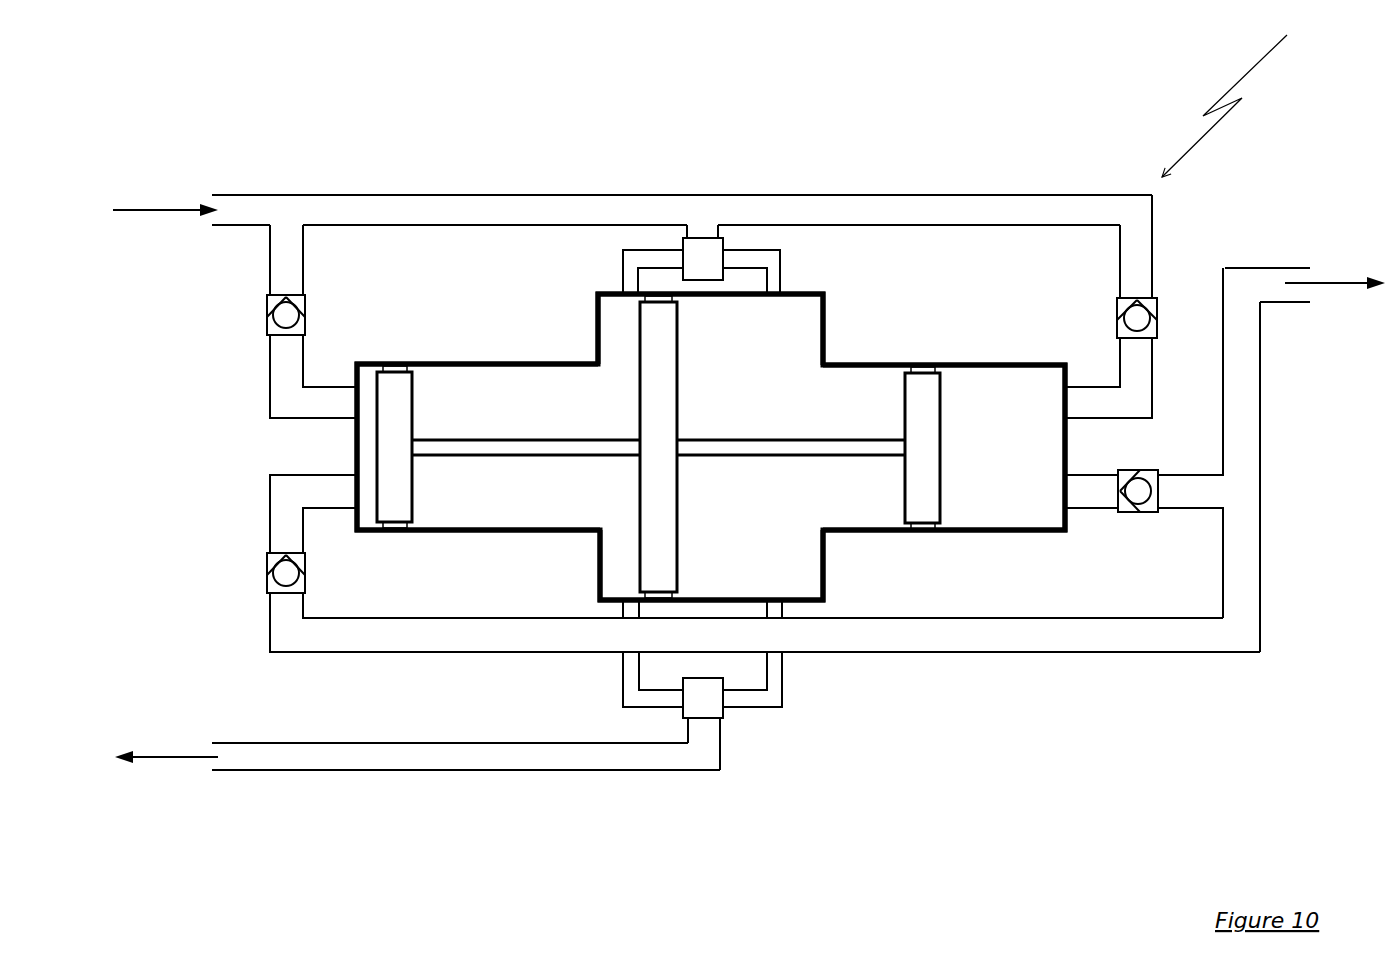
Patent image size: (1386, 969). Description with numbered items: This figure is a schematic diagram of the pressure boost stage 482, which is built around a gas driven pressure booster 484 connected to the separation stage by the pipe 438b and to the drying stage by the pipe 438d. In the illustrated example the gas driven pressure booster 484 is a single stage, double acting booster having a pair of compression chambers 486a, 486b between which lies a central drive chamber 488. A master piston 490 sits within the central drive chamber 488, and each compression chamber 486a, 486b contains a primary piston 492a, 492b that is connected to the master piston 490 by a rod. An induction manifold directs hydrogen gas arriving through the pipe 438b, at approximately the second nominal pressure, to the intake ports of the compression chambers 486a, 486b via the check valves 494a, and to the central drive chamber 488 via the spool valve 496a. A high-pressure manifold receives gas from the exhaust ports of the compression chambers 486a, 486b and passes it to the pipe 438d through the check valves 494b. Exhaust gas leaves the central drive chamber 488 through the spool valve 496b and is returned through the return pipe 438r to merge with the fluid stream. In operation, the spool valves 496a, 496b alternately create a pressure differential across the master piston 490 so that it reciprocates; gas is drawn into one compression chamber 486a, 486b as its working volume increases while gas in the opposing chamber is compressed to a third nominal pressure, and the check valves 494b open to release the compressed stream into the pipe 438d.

The pressure boost stage 482 is at (1245, 95).
The gas driven pressure booster 484 is at (556, 360).
The compression chamber 486a is at (365, 385).
The compression chamber 486b is at (973, 390).
The central drive chamber 488 is at (778, 358).
The master piston 490 is at (648, 556).
The primary piston 492a is at (393, 378).
The primary piston 492b is at (922, 497).
The check valves 494a is at (267, 325).
The check valves 494b is at (267, 568).
The spool valve 496a is at (718, 243).
The spool valve 496b is at (722, 712).
The pipe 438b is at (225, 195).
The pipe 438d is at (1278, 305).
The return pipe 438r is at (292, 773).